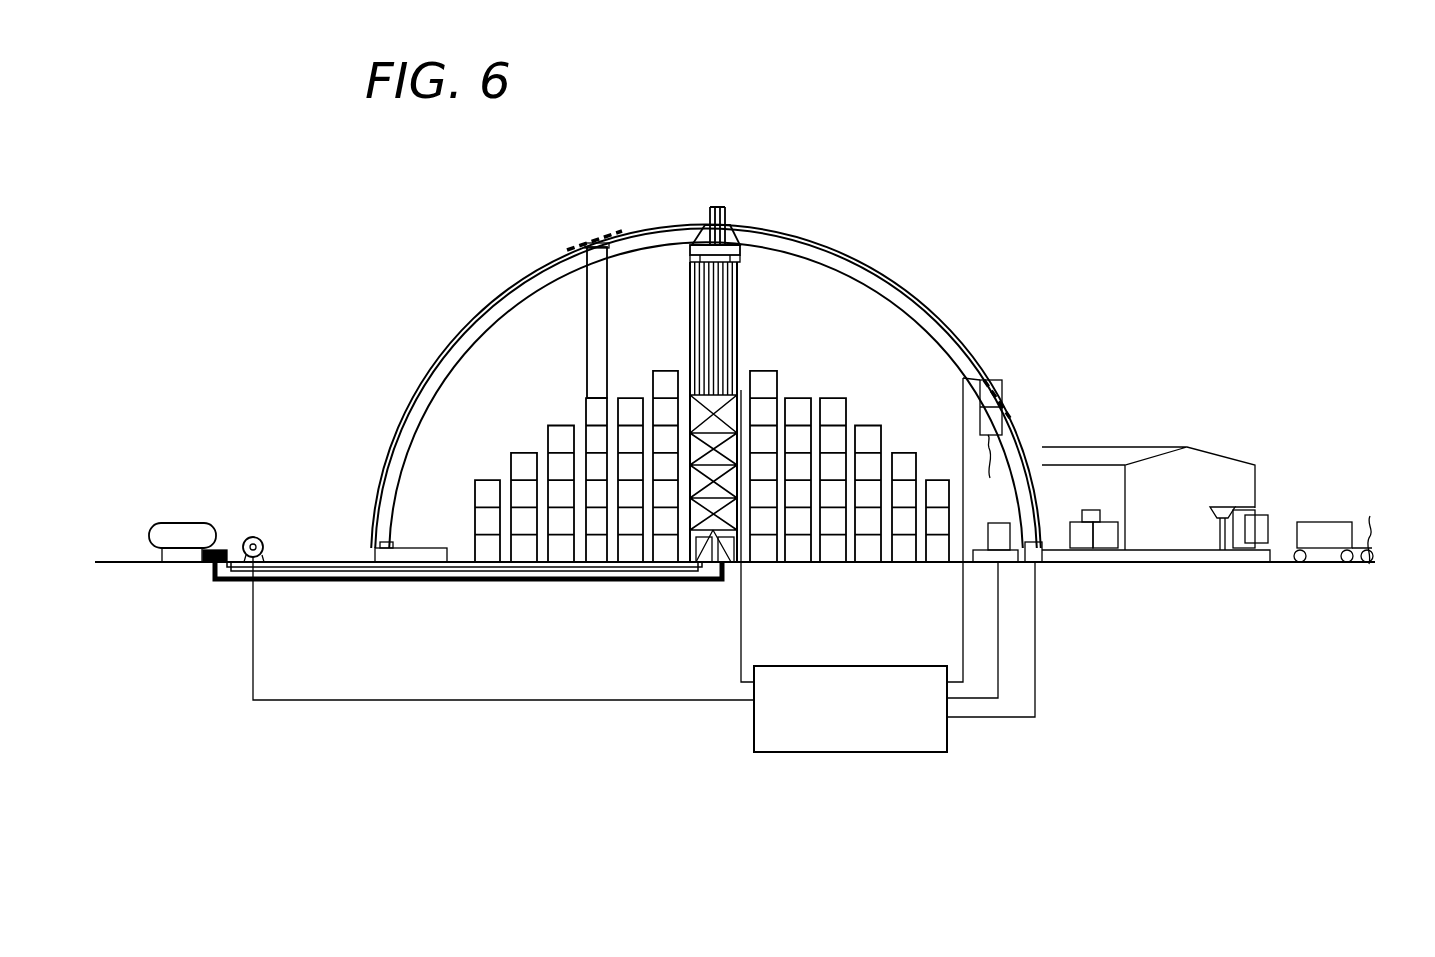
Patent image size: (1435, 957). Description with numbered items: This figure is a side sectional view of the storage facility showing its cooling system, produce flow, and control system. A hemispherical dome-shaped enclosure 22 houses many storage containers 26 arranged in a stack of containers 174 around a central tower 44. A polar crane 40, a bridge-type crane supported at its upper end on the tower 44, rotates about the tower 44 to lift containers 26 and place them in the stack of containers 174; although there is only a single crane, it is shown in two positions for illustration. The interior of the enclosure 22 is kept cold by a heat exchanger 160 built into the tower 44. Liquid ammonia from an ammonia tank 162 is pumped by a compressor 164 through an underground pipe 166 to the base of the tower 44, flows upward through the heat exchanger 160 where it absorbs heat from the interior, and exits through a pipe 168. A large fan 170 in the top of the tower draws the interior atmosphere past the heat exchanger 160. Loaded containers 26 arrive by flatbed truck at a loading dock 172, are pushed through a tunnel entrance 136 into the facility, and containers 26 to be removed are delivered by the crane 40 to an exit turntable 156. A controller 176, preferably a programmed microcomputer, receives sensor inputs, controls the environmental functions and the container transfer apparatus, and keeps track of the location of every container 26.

The dome-shaped enclosure 22 is at (478, 278).
The fan 170 is at (698, 258).
The central tower 44 is at (692, 325).
The heat exchanger 160 is at (727, 322).
The stack of containers 174 is at (588, 408).
The polar crane 40 is at (956, 379).
The storage containers 26 is at (997, 521).
The exit turntable 156 is at (1018, 563).
The tunnel entrance 136 is at (1082, 518).
The loading dock 172 is at (1208, 552).
The ammonia tank 162 is at (172, 523).
The compressor 164 is at (262, 540).
The underground pipe 166 is at (595, 580).
The pipe 168 is at (518, 580).
The controller 176 is at (841, 753).